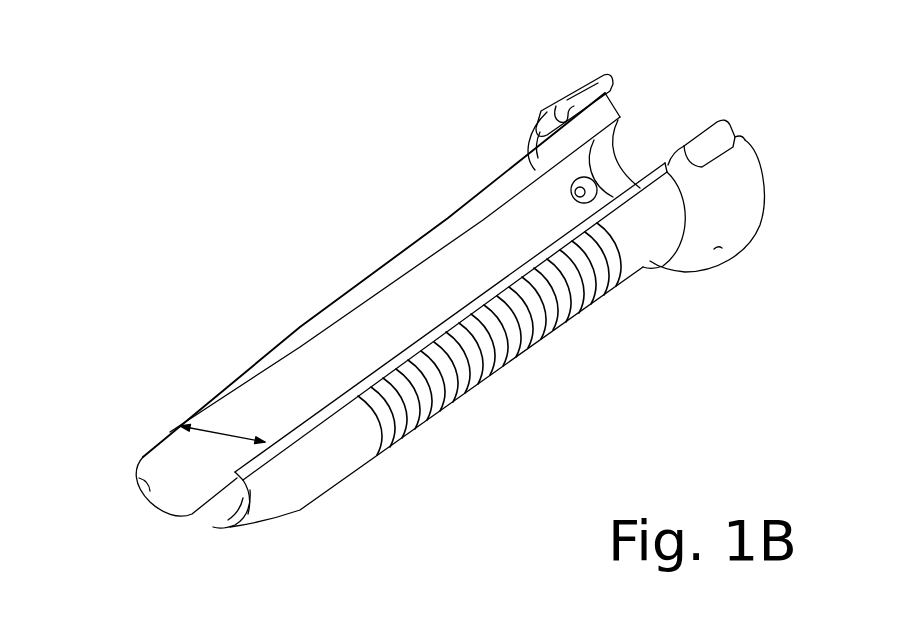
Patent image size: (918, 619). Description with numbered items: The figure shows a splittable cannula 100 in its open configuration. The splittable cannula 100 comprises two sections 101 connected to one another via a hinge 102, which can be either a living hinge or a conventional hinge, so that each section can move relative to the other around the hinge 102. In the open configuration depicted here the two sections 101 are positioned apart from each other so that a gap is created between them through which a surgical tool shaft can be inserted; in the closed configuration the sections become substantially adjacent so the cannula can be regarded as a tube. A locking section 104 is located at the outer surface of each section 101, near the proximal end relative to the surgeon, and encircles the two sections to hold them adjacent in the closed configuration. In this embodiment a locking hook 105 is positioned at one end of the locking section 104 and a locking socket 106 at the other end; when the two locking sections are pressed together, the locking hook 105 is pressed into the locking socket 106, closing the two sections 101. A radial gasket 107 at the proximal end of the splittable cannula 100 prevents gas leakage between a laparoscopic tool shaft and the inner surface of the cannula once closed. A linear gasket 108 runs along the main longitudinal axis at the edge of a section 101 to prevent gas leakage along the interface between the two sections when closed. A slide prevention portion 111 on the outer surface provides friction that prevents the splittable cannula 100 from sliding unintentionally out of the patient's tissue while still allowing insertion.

The splittable cannula 100 is at (168, 229).
The section 101 is at (137, 467).
The hinge 102 is at (243, 497).
The locking section 104 is at (540, 142).
The locking hook 105 is at (595, 82).
The locking socket 106 is at (730, 133).
The radial gasket 107 is at (613, 173).
The linear gasket 108 is at (243, 385).
The slide prevention portion 111 is at (473, 373).